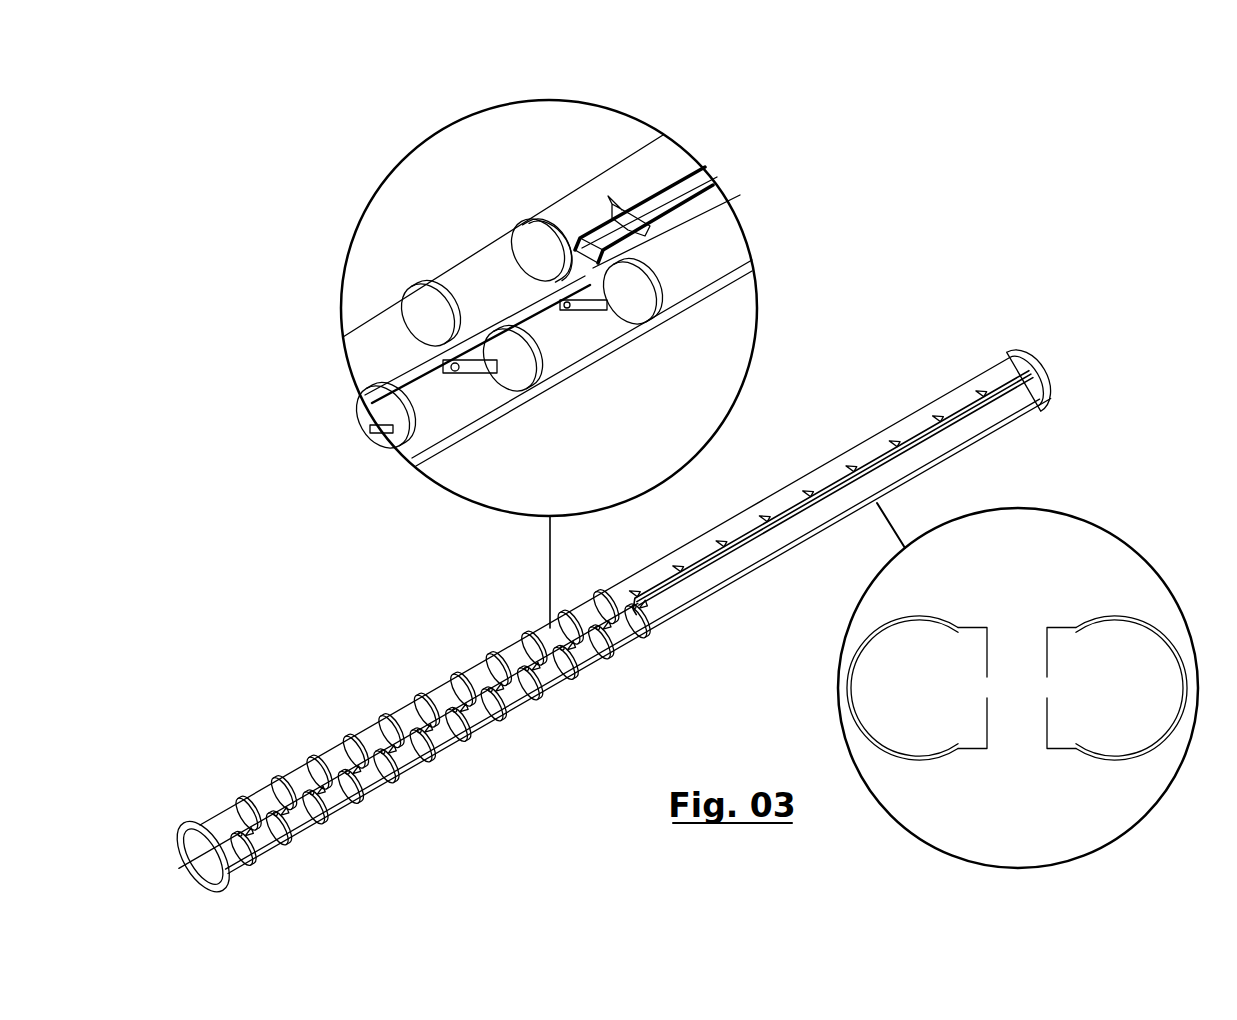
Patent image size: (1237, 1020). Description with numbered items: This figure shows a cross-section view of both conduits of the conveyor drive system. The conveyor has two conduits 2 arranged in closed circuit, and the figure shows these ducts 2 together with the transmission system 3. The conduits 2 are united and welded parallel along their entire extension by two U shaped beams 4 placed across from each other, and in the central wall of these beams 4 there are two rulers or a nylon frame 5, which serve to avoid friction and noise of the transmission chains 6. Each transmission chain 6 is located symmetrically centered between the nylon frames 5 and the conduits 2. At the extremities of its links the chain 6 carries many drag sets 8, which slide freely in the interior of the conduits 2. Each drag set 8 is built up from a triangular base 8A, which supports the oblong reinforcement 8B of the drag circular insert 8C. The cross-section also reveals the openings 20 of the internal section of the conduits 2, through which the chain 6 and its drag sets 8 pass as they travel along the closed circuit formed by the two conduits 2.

The conduits 2 is at (687, 285).
The transmission system 3 is at (647, 285).
The U shaped beams 4 is at (703, 187).
The rulers or nylon frame 5 is at (578, 240).
The transmission chain 6 is at (413, 372).
The drag sets 8 is at (535, 280).
The triangular base 8A is at (518, 262).
The oblong reinforcement 8B is at (532, 276).
The drag circular insert 8C is at (540, 225).
The openings 20 is at (987, 690).